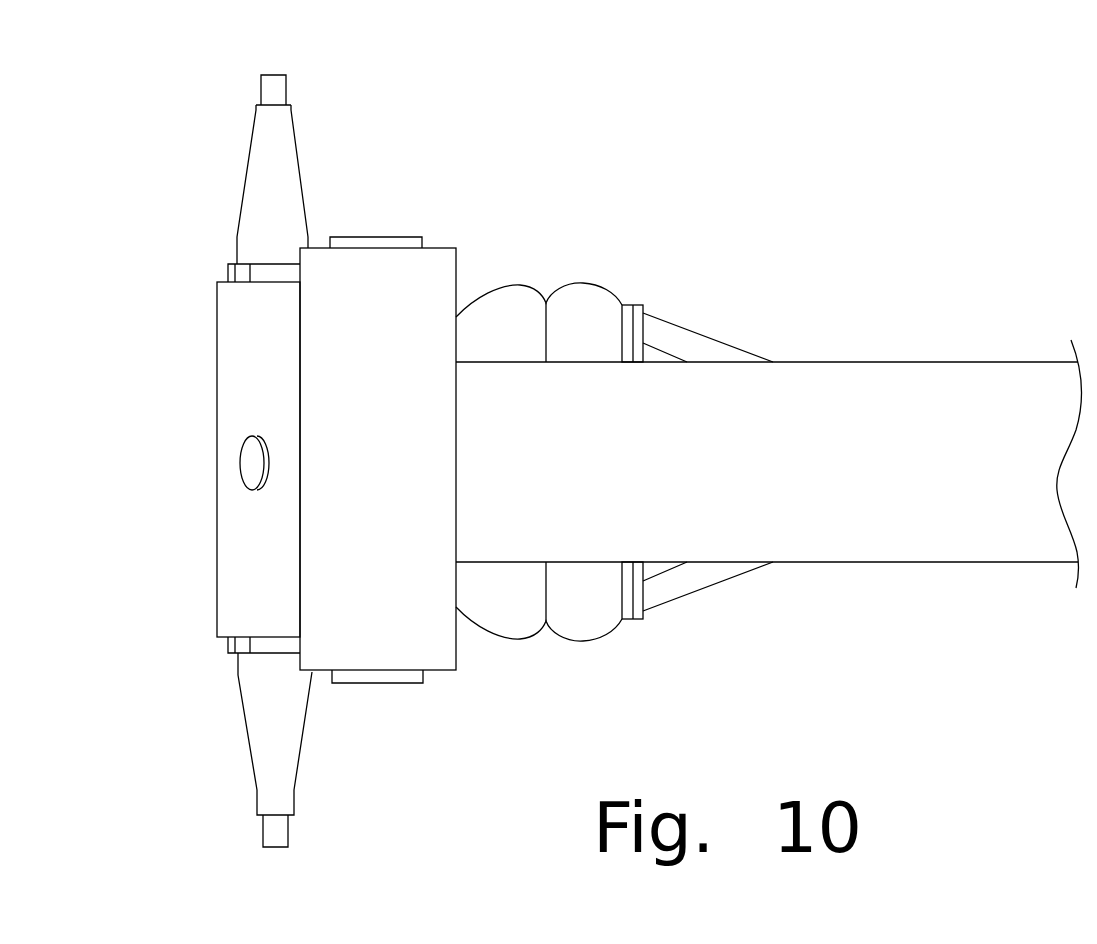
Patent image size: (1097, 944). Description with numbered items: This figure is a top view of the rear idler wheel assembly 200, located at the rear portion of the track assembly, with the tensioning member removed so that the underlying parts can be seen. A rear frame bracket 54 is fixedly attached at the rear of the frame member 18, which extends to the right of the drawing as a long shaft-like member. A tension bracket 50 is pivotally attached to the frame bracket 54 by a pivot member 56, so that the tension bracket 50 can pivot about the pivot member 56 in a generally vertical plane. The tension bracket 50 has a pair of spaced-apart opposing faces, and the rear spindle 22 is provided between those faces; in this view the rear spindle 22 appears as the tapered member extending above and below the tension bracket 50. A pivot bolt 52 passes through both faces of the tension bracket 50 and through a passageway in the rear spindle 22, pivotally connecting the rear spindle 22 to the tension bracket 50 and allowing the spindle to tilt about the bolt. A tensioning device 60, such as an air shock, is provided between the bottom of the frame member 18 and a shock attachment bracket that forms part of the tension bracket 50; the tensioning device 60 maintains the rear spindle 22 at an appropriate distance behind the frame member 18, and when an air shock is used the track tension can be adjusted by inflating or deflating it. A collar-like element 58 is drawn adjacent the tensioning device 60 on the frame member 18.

The rear idler wheel assembly 200 is at (823, 131).
The frame member 18 is at (846, 484).
The rear spindle 22 is at (262, 130).
The tension bracket 50 is at (228, 342).
The pivot bolt 52 is at (255, 465).
The rear frame bracket 54 is at (438, 287).
The pivot member 56 is at (380, 242).
The collar 58 is at (636, 600).
The tensioning device 60 is at (583, 642).